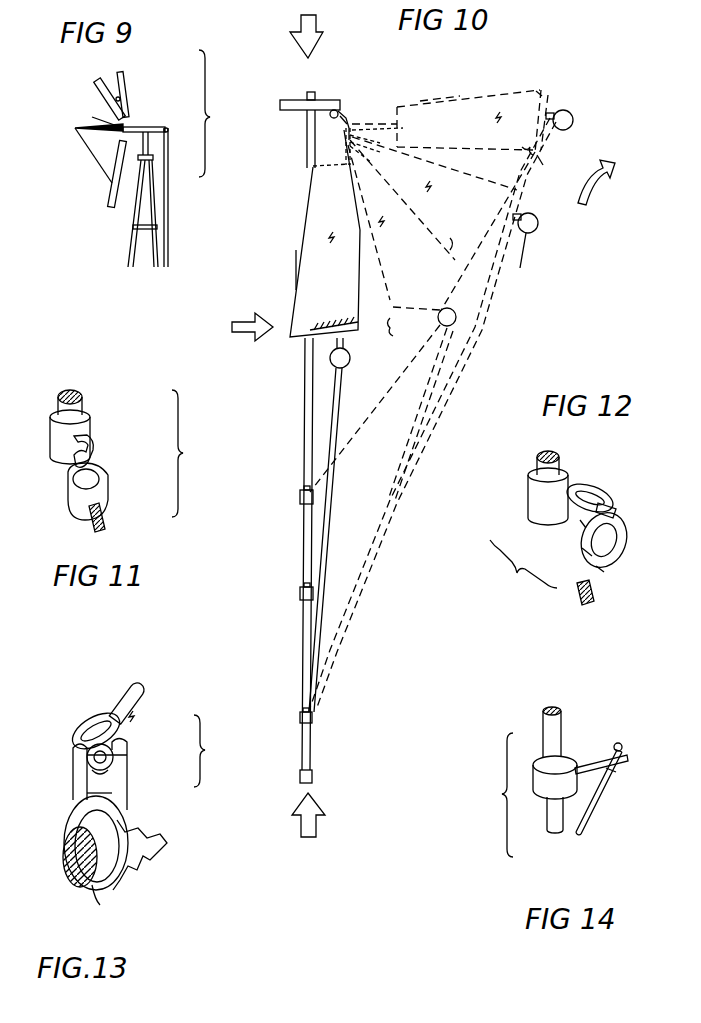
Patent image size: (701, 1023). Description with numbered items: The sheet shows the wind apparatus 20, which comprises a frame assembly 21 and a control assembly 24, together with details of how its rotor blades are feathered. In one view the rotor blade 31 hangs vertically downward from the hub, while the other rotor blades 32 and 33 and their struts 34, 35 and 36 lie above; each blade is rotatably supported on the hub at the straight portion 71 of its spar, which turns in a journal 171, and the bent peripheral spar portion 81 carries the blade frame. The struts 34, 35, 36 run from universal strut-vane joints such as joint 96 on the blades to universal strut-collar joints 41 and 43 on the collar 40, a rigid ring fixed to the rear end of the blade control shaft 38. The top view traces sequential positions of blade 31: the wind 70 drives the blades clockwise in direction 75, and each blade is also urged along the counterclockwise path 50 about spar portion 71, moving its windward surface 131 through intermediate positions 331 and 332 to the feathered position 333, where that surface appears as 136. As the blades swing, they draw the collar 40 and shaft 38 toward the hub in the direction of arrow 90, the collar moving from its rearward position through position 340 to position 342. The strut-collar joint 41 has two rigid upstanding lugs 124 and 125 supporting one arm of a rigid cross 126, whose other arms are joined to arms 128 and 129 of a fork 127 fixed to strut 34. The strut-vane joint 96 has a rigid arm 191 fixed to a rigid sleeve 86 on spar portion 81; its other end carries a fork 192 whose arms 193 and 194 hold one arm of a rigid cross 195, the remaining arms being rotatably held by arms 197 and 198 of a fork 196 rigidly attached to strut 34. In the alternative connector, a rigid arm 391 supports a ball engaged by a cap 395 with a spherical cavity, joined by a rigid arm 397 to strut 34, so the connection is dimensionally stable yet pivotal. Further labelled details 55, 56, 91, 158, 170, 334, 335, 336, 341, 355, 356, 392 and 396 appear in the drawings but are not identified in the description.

In FIG. 9, the apparatus 20 is at (215, 113).
In FIG. 9, the frame assembly 21 is at (130, 240).
In FIG. 9, the control assembly 24 is at (153, 127).
In FIG. 9, the rotor blade 31 is at (108, 200).
In FIG. 10, the rotor blade 31 is at (303, 223).
In FIG. 9, the rotor blade 32 is at (95, 88).
In FIG. 9, the rotor blade 33 is at (123, 90).
In FIG. 9, the strut 34 is at (98, 158).
In FIG. 10, the strut 34 is at (331, 483).
In FIG. 11, the strut 34 is at (103, 528).
In FIG. 12, the strut 34 is at (575, 597).
In FIG. 13, the strut 34 is at (127, 693).
In FIG. 14, the strut 34 is at (590, 823).
In FIG. 9, the strut 35 is at (92, 117).
In FIG. 9, the strut 36 is at (118, 95).
In FIG. 9, the blade control shaft 38 is at (107, 129).
In FIG. 10, the blade control shaft 38 is at (305, 393).
In FIG. 13, the blade control shaft 38 is at (102, 906).
In FIG. 10, the collar 40 is at (312, 777).
In FIG. 13, the collar 40 is at (133, 820).
In FIG. 13, the universal strut-collar joint 41 is at (210, 751).
In FIG. 13, the universal strut-collar joint 43 is at (165, 843).
In FIG. 10, the path of the blade 50 is at (611, 189).
In FIG. 10, the sail body 55 is at (300, 270).
In FIG. 10, the ball stub connector 56 is at (360, 330).
In FIG. 10, the wind 70 is at (316, 18).
In FIG. 10, the straight portion of spar 71 is at (338, 112).
In FIG. 10, the arrow of clockwise direction 75 is at (243, 322).
In FIG. 10, the bent peripheral spar portion 81 is at (348, 153).
In FIG. 11, the bent peripheral spar portion 81 is at (73, 390).
In FIG. 12, the bent peripheral spar portion 81 is at (557, 452).
In FIG. 11, the rigid sleeve 86 is at (85, 412).
In FIG. 12, the rigid sleeve 86 is at (553, 497).
In FIG. 14, the rigid sleeve 86 is at (548, 797).
In FIG. 10, the arrow of shaft movement direction 90 is at (322, 828).
In FIG. 10, the radiating connection lines 91 is at (353, 125).
In FIG. 10, the universal strut-vane joint 96 is at (350, 363).
In FIG. 11, the universal strut-vane joint 96 is at (193, 453).
In FIG. 12, the universal strut-vane joint 96 is at (523, 564).
In FIG. 13, the rigid upstanding lug 124 is at (127, 775).
In FIG. 13, the rigid upstanding lug 125 is at (92, 793).
In FIG. 13, the rigid cross 126 is at (120, 763).
In FIG. 13, the fork 127 is at (117, 730).
In FIG. 13, the arm of fork 128 is at (87, 722).
In FIG. 13, the arm of fork 129 is at (92, 777).
In FIG. 10, the front blade windward surface 131 is at (336, 273).
In FIG. 10, the shifted position of windward surface 136 is at (478, 130).
In FIG. 9, the vertical post 158 is at (165, 157).
In FIG. 10, the top crossbar 170 is at (337, 100).
In FIG. 10, the journal 171 is at (347, 118).
In FIG. 12, the rigid arm 191 is at (570, 495).
In FIG. 11, the fork 192 is at (88, 448).
In FIG. 12, the arm of fork 193 is at (607, 497).
In FIG. 12, the arm of fork 194 is at (578, 522).
In FIG. 12, the rigid cross 195 is at (608, 523).
In FIG. 11, the fork 196 is at (102, 500).
In FIG. 12, the fork 196 is at (605, 572).
In FIG. 11, the arm of fork 197 is at (122, 479).
In FIG. 12, the arm of fork 197 is at (625, 532).
In FIG. 12, the arm of fork 198 is at (580, 550).
In FIG. 10, the intermediate position of rotor blade 331 is at (402, 243).
In FIG. 10, the intermediate position of rotor blade 332 is at (442, 224).
In FIG. 10, the feathered position of rotor blade 333 is at (435, 100).
In FIG. 10, the rope lower position (dashed) 334 is at (337, 650).
In FIG. 10, the rope upper position (dashed) 335 is at (466, 338).
In FIG. 10, the sail edge 336 is at (542, 162).
In FIG. 10, the position of collar 340 is at (313, 713).
In FIG. 10, the middle mast clip 341 is at (300, 597).
In FIG. 10, the position of collar 342 is at (305, 505).
In FIG. 10, the sail corner 355 is at (514, 159).
In FIG. 10, the sail top corner 356 is at (540, 88).
In FIG. 14, the rigid arm 391 is at (621, 744).
In FIG. 14, the horizontal arm 392 is at (629, 760).
In FIG. 14, the cap 395 is at (623, 745).
In FIG. 10, the ball fitting 396 is at (567, 112).
In FIG. 14, the ball fitting 396 is at (494, 795).
In FIG. 14, the rigid arm 397 is at (613, 775).